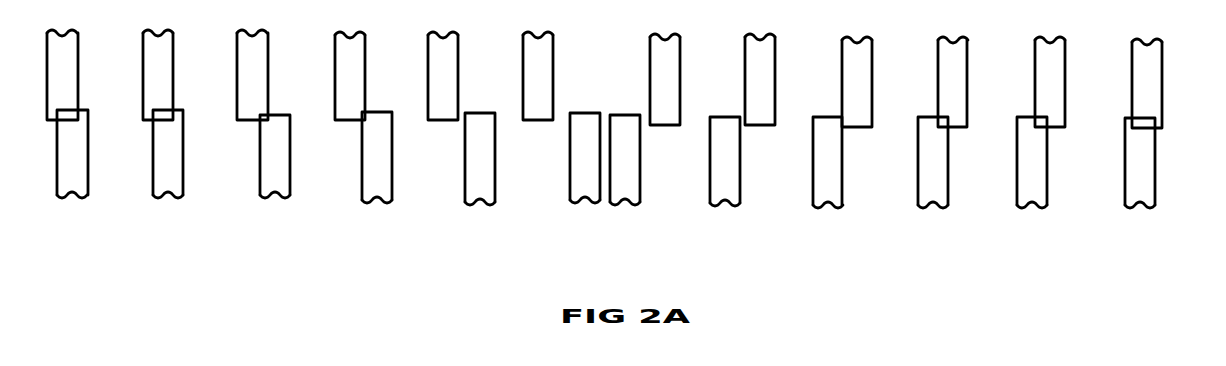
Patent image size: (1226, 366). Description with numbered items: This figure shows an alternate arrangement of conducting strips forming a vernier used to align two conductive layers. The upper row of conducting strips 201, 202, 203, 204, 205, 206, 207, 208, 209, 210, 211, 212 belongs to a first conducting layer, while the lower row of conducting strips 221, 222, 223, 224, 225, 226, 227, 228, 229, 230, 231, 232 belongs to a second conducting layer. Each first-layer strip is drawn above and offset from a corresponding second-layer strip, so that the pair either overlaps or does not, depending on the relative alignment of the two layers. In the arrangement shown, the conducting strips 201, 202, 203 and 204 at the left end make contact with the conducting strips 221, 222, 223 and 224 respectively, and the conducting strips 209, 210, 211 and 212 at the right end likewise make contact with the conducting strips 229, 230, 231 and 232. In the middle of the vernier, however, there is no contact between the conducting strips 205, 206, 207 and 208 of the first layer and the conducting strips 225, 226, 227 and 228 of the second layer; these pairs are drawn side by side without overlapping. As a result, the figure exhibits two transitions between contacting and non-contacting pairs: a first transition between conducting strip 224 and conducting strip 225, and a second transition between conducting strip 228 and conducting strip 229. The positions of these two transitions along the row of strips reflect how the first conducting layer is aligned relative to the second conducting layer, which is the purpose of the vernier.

The conducting strip 201 is at (78, 44).
The conducting strip 202 is at (173, 42).
The conducting strip 203 is at (268, 61).
The conducting strip 204 is at (365, 67).
The conducting strip 205 is at (458, 62).
The conducting strip 206 is at (553, 56).
The conducting strip 207 is at (680, 61).
The conducting strip 208 is at (775, 59).
The conducting strip 209 is at (872, 64).
The conducting strip 210 is at (967, 62).
The conducting strip 211 is at (1065, 66).
The conducting strip 212 is at (1162, 54).
The conducting strip 221 is at (88, 190).
The conducting strip 222 is at (183, 190).
The conducting strip 223 is at (290, 190).
The conducting strip 224 is at (392, 195).
The conducting strip 225 is at (495, 197).
The conducting strip 226 is at (582, 200).
The conducting strip 227 is at (640, 197).
The conducting strip 228 is at (740, 198).
The conducting strip 229 is at (842, 200).
The conducting strip 230 is at (948, 200).
The conducting strip 231 is at (1047, 200).
The conducting strip 232 is at (1155, 200).